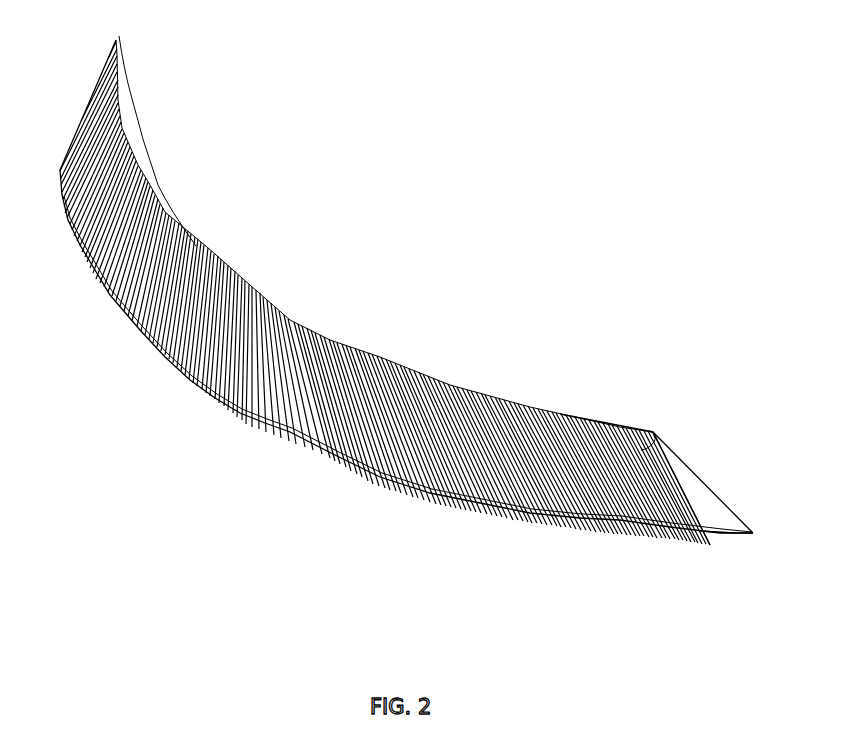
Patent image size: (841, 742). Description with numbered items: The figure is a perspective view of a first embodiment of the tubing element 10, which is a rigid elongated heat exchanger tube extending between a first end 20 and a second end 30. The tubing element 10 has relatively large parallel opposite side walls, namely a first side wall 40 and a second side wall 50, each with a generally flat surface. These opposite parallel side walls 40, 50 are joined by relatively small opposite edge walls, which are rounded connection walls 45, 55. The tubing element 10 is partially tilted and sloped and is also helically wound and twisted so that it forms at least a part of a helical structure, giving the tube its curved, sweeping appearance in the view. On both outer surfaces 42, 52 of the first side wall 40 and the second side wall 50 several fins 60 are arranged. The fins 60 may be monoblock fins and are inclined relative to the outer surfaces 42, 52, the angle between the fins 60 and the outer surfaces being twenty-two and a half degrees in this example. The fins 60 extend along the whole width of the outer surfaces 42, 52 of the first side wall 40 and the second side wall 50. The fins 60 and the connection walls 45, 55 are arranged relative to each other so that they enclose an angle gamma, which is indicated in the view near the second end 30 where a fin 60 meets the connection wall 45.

The tubing element 10 is at (410, 312).
The first end 20 is at (86, 107).
The second end 30 is at (717, 493).
The first side wall 40 is at (653, 432).
The outer surface of first side wall 42 is at (668, 459).
The connection wall 45 is at (627, 424).
The second side wall 50 is at (751, 542).
The outer surface of second side wall 52 is at (725, 538).
The connection wall 55 is at (472, 502).
The fins 60 is at (331, 335).